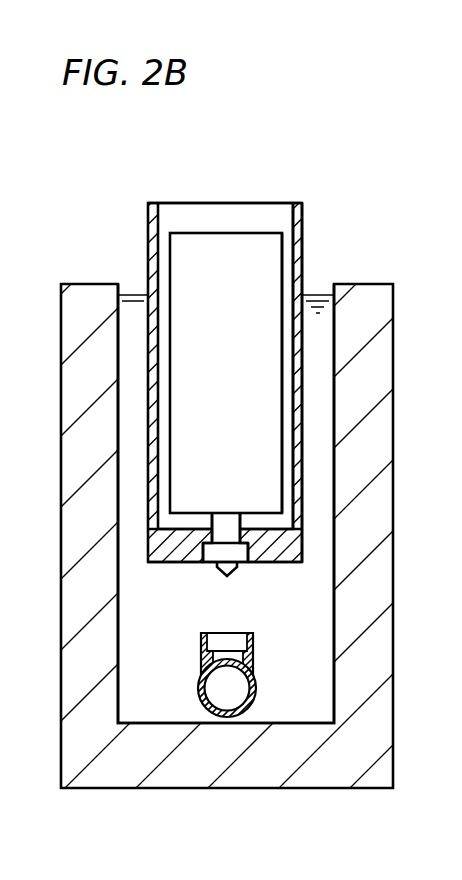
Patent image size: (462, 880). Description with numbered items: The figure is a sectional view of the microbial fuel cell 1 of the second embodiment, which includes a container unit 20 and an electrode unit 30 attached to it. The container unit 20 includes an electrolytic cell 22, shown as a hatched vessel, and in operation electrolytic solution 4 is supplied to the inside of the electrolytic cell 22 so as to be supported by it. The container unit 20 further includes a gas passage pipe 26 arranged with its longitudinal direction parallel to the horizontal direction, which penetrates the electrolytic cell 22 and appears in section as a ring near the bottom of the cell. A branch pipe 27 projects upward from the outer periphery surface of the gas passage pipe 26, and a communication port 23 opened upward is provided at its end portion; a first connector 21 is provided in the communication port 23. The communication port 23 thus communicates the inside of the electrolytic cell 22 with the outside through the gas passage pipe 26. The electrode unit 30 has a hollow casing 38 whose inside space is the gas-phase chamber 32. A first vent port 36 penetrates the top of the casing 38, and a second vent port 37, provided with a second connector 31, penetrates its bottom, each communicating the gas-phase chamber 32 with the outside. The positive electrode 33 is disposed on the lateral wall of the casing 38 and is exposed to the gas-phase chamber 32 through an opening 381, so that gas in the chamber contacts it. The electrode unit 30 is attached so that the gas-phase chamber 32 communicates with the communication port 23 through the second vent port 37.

The microbial fuel cell 1 is at (231, 519).
The electrolytic solution 4 is at (318, 298).
The container unit 20 is at (393, 773).
The first connector 21 is at (240, 638).
The electrolytic cell 22 is at (395, 688).
The communication port 23 is at (223, 659).
The gas passage pipe 26 is at (229, 712).
The branch pipe 27 is at (258, 663).
The electrode unit 30 is at (303, 481).
The second connector 31 is at (244, 551).
The gas-phase chamber 32 is at (288, 359).
The positive electrode 33 is at (248, 343).
The first vent port 36 is at (253, 203).
The second vent port 37 is at (227, 534).
The casing 38 is at (303, 457).
The opening 381 is at (272, 393).